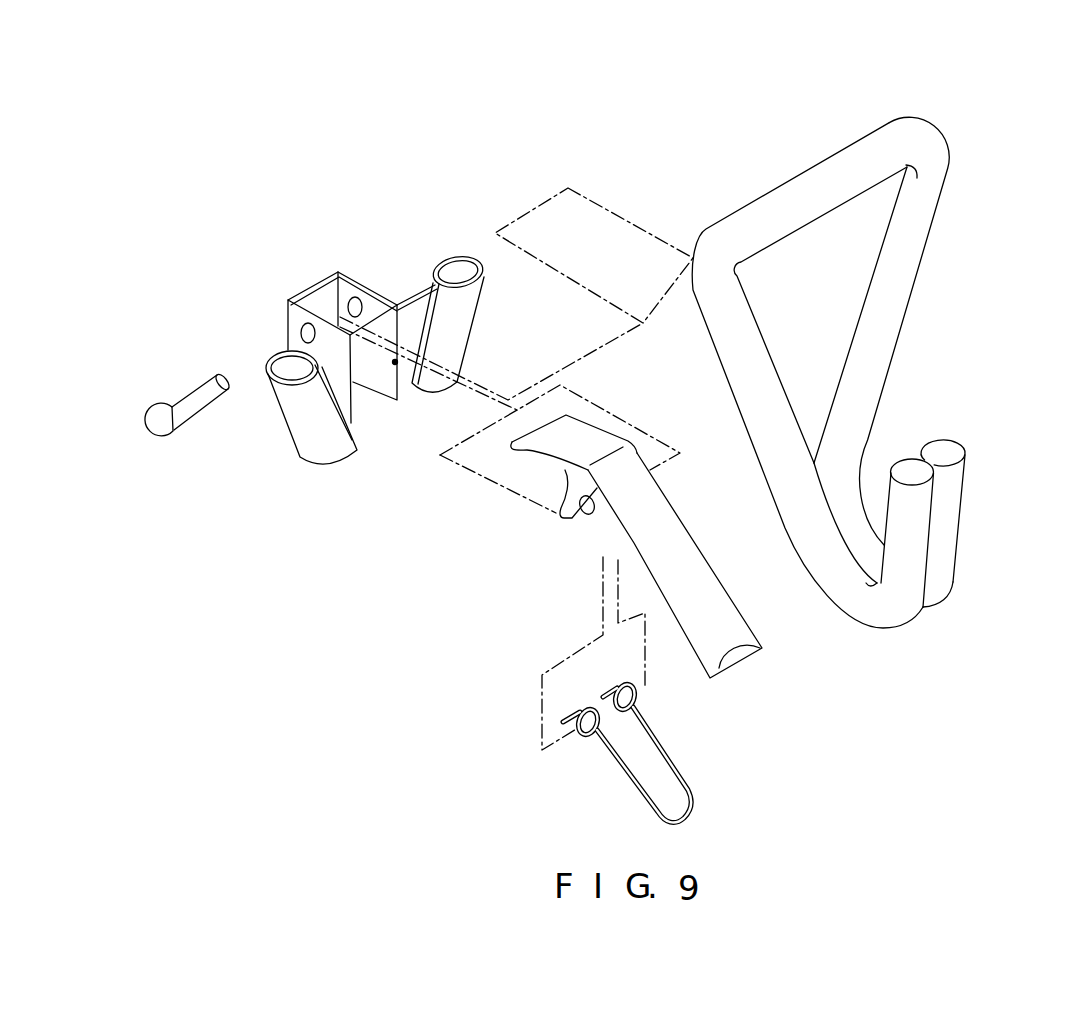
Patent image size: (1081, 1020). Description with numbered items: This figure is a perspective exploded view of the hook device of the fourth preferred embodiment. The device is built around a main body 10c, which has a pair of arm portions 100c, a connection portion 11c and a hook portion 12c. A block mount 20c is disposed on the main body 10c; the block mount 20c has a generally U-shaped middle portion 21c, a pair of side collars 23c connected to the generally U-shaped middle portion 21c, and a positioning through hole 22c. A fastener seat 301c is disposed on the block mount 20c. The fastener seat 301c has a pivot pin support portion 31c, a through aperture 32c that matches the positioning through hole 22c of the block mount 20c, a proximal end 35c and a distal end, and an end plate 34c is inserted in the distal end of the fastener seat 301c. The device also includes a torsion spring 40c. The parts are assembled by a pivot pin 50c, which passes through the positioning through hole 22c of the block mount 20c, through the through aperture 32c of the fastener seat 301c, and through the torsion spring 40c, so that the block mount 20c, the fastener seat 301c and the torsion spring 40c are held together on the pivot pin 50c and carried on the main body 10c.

The main body 10c is at (796, 150).
The arm portions 100c is at (910, 297).
The connection portion 11c is at (815, 463).
The hook portion 12c is at (960, 517).
The block mount 20c is at (380, 224).
The generally U-shaped middle portion 21c is at (324, 312).
The positioning through hole 22c is at (367, 302).
The side collars 23c is at (458, 325).
The pivot pin 50c is at (187, 402).
The fastener seat 301c is at (657, 400).
The proximal end 35c is at (575, 432).
The pivot pin support portion 31c is at (572, 497).
The through aperture 32c is at (587, 516).
The end plate 34c is at (753, 658).
The torsion spring 40c is at (577, 784).